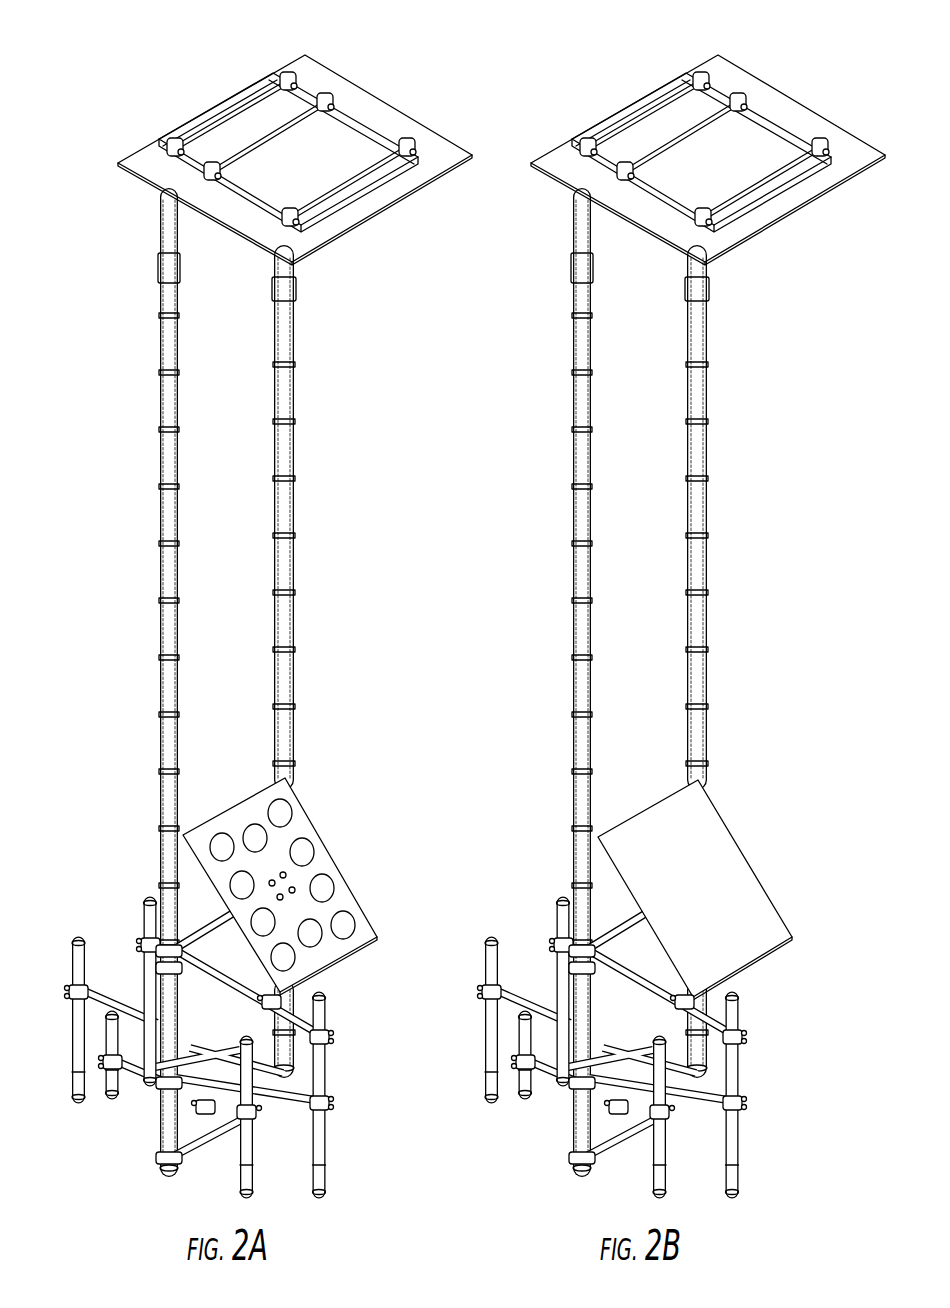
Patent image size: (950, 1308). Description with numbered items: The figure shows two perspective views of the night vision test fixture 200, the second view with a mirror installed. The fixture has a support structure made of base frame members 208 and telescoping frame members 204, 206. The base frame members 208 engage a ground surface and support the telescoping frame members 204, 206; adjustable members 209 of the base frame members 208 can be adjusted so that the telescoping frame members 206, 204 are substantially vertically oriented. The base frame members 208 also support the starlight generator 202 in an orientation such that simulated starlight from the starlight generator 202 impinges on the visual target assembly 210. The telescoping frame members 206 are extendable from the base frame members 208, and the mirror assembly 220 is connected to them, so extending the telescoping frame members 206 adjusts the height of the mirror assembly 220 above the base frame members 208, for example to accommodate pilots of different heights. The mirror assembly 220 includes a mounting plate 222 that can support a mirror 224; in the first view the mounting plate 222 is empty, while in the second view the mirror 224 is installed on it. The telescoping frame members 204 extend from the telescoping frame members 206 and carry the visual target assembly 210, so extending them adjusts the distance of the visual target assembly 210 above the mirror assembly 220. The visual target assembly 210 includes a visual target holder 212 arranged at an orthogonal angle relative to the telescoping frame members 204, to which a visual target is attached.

In FIG. 2A, the night vision test fixture 200 is at (176, 58).
In FIG. 2B, the night vision test fixture 200 is at (658, 604).
In FIG. 2A, the starlight generator 202 is at (157, 1068).
In FIG. 2B, the starlight generator 202 is at (622, 1047).
In FIG. 2A, the telescoping frame members 204 is at (162, 570).
In FIG. 2B, the telescoping frame members 204 is at (642, 684).
In FIG. 2A, the telescoping frame members 206 is at (160, 970).
In FIG. 2B, the telescoping frame members 206 is at (549, 1051).
In FIG. 2A, the base frame members 208 is at (74, 1045).
In FIG. 2B, the base frame members 208 is at (624, 1048).
In FIG. 2A, the adjustable members 209 is at (141, 943).
In FIG. 2B, the adjustable members 209 is at (617, 1033).
In FIG. 2A, the visual target assembly 210 is at (362, 238).
In FIG. 2B, the visual target assembly 210 is at (708, 182).
In FIG. 2A, the visual target holder 212 is at (390, 187).
In FIG. 2B, the visual target holder 212 is at (708, 160).
In FIG. 2A, the mirror assembly 220 is at (327, 798).
In FIG. 2B, the mirror assembly 220 is at (698, 875).
In FIG. 2A, the mounting plate 222 is at (316, 840).
In FIG. 2B, the mirror 224 is at (695, 890).